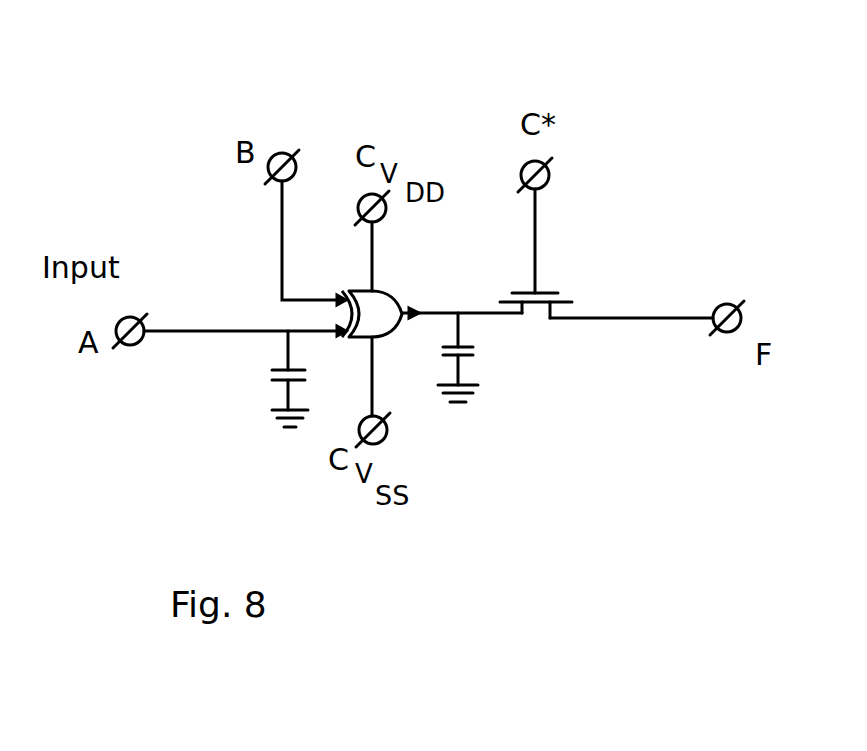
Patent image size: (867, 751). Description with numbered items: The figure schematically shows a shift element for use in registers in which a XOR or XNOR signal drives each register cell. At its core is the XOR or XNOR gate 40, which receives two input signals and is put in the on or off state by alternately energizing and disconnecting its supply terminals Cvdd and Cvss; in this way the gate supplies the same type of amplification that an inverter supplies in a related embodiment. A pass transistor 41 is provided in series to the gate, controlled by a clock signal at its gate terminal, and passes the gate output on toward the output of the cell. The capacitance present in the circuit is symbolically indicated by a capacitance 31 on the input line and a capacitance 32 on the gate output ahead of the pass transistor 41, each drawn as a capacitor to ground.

The XOR or XNOR gate 40 is at (337, 275).
The pass transistor 41 is at (568, 275).
The capacitance 31 is at (252, 383).
The capacitance 32 is at (478, 347).